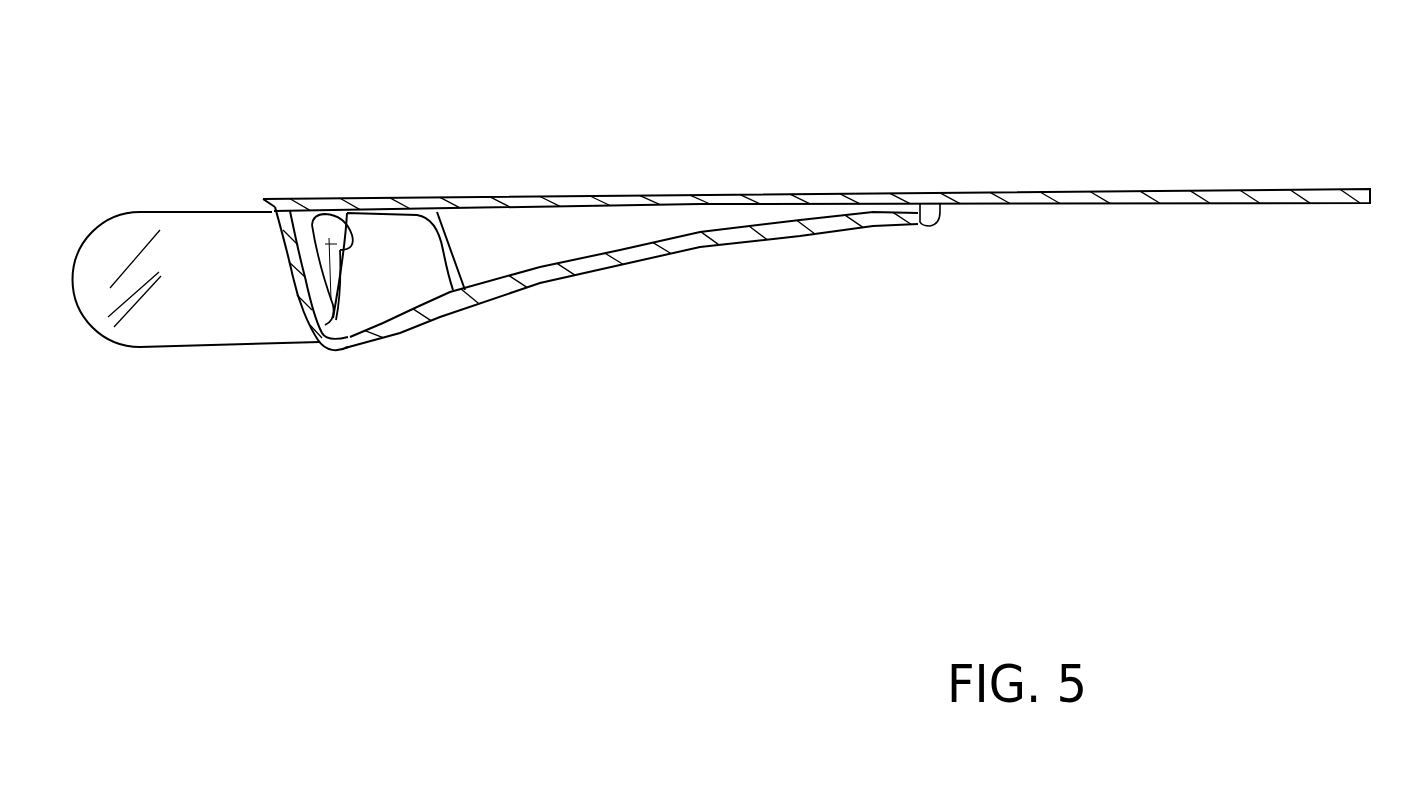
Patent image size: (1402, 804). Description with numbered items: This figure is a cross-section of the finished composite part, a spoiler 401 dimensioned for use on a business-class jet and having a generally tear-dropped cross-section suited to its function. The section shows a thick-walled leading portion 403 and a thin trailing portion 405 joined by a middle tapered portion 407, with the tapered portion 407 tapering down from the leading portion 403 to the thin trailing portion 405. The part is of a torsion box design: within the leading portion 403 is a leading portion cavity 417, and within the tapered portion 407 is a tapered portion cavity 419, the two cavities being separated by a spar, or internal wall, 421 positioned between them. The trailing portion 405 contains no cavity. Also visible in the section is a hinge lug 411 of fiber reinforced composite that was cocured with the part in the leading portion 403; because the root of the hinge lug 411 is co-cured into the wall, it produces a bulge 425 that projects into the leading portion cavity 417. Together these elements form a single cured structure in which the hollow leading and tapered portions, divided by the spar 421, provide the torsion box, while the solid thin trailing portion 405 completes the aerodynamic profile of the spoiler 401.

The spoiler 401 is at (828, 247).
The leading portion 403 is at (300, 252).
The trailing portion 405 is at (1370, 203).
The tapered portion 407 is at (655, 254).
The hinge lug 411 is at (157, 243).
The leading portion cavity 417 is at (407, 255).
The tapered portion cavity 419 is at (587, 231).
The spar 421 is at (447, 248).
The bulge 425 is at (320, 240).